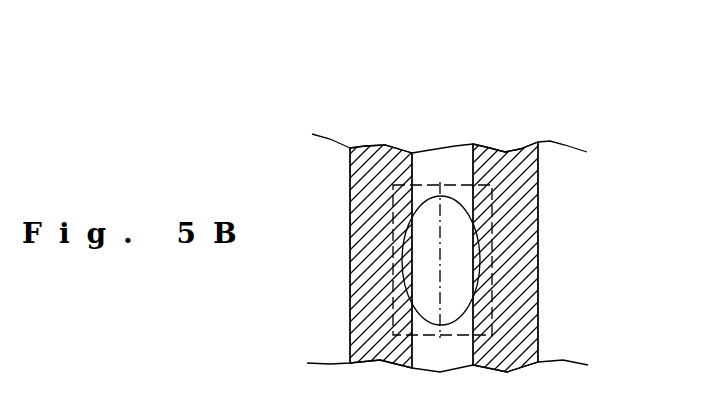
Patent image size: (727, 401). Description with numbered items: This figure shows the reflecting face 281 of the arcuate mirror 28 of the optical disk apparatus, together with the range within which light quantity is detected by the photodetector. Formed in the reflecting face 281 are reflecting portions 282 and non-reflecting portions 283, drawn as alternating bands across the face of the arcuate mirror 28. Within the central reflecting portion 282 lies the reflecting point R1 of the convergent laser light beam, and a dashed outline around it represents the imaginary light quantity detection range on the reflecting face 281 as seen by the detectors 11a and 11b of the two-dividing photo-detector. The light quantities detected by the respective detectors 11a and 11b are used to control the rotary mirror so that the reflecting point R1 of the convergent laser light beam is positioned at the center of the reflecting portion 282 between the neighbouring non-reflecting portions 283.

The arcuate mirror 28 is at (485, 194).
The reflecting face 281 is at (570, 172).
The reflecting portion 282 is at (488, 95).
The non-reflecting portion 283 is at (390, 145).
The detector 11a is at (425, 190).
The detector 11b is at (457, 197).
The reflecting point R1 is at (462, 295).